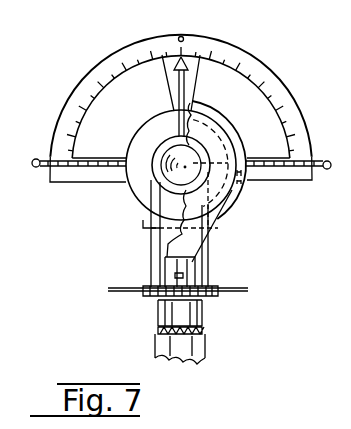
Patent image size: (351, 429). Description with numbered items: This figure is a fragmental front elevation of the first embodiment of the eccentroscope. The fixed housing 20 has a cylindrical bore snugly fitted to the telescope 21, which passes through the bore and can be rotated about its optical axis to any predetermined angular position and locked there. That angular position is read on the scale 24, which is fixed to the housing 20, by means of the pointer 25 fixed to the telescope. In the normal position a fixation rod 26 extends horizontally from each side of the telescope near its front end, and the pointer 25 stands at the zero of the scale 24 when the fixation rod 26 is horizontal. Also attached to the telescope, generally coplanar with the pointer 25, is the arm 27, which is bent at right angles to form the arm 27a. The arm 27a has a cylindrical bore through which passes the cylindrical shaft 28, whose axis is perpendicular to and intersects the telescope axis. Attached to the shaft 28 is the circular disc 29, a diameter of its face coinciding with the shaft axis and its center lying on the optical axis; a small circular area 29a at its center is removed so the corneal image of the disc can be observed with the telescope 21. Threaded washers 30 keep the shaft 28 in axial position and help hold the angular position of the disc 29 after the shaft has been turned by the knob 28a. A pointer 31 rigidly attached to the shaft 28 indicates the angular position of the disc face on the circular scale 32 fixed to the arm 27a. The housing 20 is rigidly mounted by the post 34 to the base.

The fixed housing 20 is at (143, 121).
The telescope 21 is at (140, 143).
The scale 24 is at (98, 62).
The pointer 25 is at (187, 77).
The fixation rod 26 is at (42, 160).
The arm 27 is at (150, 250).
The arm 27a is at (147, 293).
The cylindrical shaft 28 is at (192, 265).
The knob 28a is at (201, 332).
The circular disc 29 is at (241, 136).
The small circular area 29a is at (192, 158).
The threaded washers 30 is at (200, 303).
The pointer 31 is at (186, 274).
The circular scale 32 is at (249, 290).
The post 34 is at (155, 342).